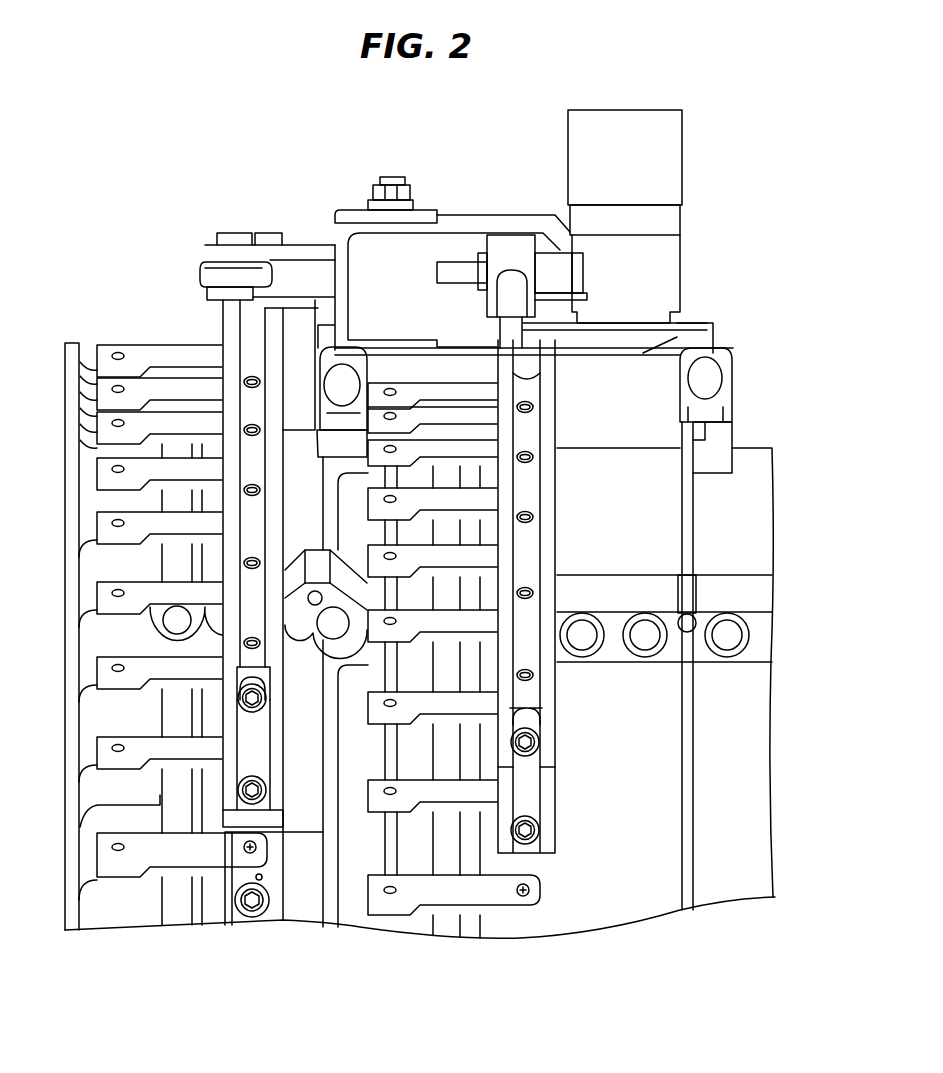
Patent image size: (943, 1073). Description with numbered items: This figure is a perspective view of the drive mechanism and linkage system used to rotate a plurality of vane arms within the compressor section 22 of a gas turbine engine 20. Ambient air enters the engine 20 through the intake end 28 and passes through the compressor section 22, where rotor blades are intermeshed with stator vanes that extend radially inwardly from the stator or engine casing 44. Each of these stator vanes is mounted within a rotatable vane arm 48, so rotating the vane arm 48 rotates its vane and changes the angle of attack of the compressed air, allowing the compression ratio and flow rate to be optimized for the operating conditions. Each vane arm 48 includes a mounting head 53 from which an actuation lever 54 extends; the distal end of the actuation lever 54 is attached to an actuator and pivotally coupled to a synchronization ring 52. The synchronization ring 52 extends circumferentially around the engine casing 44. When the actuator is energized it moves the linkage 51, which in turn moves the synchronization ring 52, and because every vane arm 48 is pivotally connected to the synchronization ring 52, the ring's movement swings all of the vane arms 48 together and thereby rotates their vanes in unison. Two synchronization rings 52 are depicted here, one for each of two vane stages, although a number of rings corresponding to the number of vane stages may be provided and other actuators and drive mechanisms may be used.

The gas turbine engine 20 is at (740, 318).
The compressor section 22 is at (304, 905).
The intake end 28 is at (65, 567).
The engine casing 44 is at (737, 520).
The vane arm 48 is at (110, 350).
The linkage 51 is at (420, 222).
The synchronization ring 52 is at (245, 455).
The mounting head 53 is at (118, 440).
The actuation lever 54 is at (185, 340).